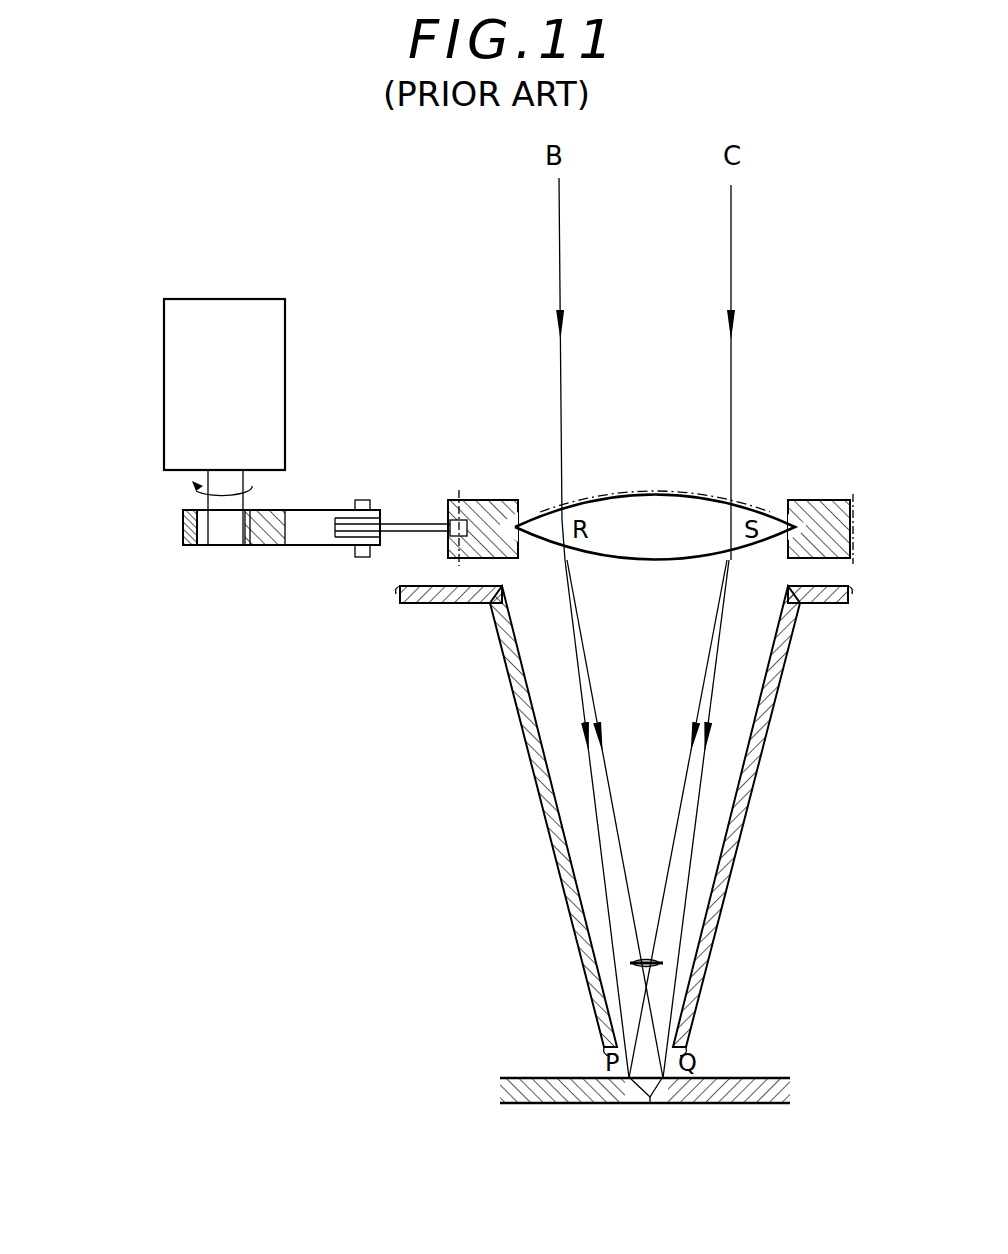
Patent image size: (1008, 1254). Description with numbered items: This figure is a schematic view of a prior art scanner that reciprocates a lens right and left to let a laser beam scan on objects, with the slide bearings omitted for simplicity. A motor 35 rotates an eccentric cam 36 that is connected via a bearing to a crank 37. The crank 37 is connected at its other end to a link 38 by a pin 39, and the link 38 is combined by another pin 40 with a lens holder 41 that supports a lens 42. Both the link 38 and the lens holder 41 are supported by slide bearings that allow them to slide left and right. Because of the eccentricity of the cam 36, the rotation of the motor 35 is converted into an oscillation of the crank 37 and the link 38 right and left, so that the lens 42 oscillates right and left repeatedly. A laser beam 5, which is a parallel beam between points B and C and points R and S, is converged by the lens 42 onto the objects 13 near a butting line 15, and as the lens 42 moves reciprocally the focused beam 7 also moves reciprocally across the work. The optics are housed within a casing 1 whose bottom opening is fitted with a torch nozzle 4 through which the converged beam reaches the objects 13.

The casing 1 is at (788, 664).
The torch nozzle 4 is at (701, 1016).
The laser beam 5 is at (731, 265).
The converged laser beam 7 is at (713, 744).
The objects 13 is at (530, 1093).
The butting line 15 is at (650, 1103).
The motor 35 is at (224, 422).
The eccentric cam 36 is at (223, 528).
The crank 37 is at (308, 538).
The link 38 is at (413, 530).
The pin 39 is at (357, 500).
The pin 40 is at (447, 510).
The lens holder 41 is at (528, 478).
The lens 42 is at (636, 541).